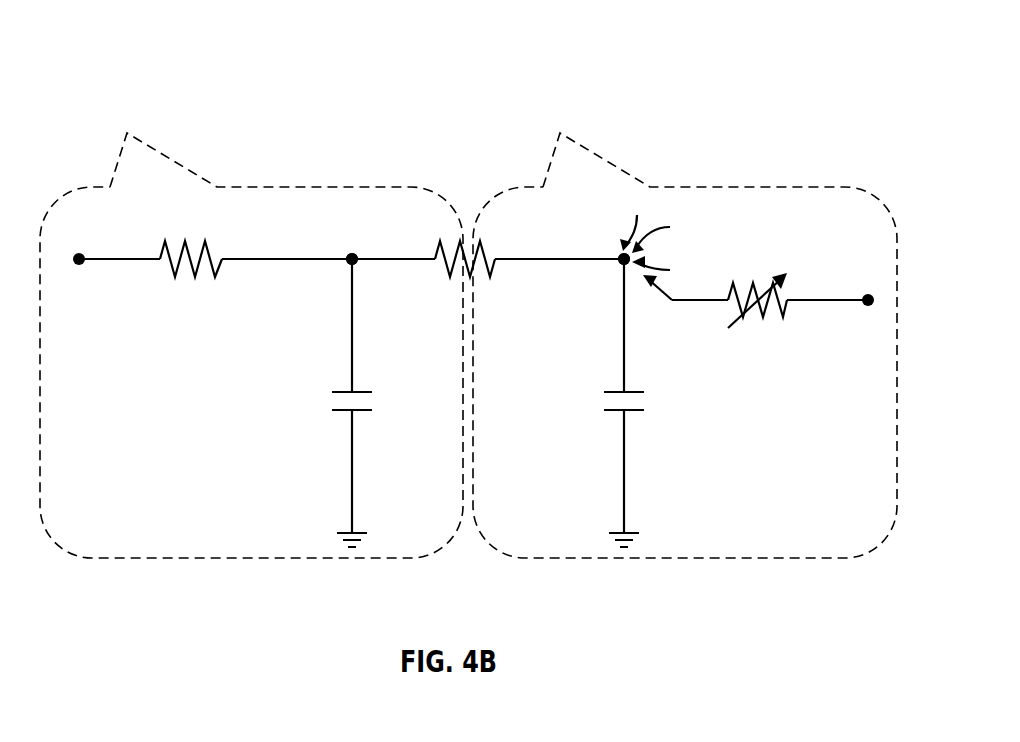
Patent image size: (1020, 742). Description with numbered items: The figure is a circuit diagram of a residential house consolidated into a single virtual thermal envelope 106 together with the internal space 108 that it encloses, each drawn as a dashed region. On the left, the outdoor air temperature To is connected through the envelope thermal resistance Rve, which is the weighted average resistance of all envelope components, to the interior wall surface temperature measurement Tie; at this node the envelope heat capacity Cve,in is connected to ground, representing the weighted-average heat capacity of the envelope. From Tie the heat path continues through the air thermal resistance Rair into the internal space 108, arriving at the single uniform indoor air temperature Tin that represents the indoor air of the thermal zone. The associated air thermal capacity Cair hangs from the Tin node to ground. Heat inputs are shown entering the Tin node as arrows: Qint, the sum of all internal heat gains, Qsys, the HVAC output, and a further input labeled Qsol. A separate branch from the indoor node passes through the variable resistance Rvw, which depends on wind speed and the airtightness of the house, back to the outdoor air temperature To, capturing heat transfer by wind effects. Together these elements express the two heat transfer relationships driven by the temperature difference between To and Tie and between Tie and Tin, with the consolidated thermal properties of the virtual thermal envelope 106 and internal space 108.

The virtual thermal envelope 106 is at (127, 133).
The internal space 108 is at (560, 133).
The outdoor air temperature To is at (472, 255).
The thermal resistance of virtual thermal envelope Rve is at (191, 239).
The interior wall surface temperature measurement Tie is at (351, 233).
The air thermal resistance Rair is at (465, 236).
The indoor air temperature Tin is at (601, 239).
The internal heat gains Qint is at (640, 214).
The solar heat load Qsol is at (678, 229).
The HVAC output Qsys is at (680, 274).
The variable wind resistance Rvw is at (757, 282).
The heat capacity of virtual thermal envelope Cve,in is at (390, 401).
The air thermal capacity Cair is at (651, 401).